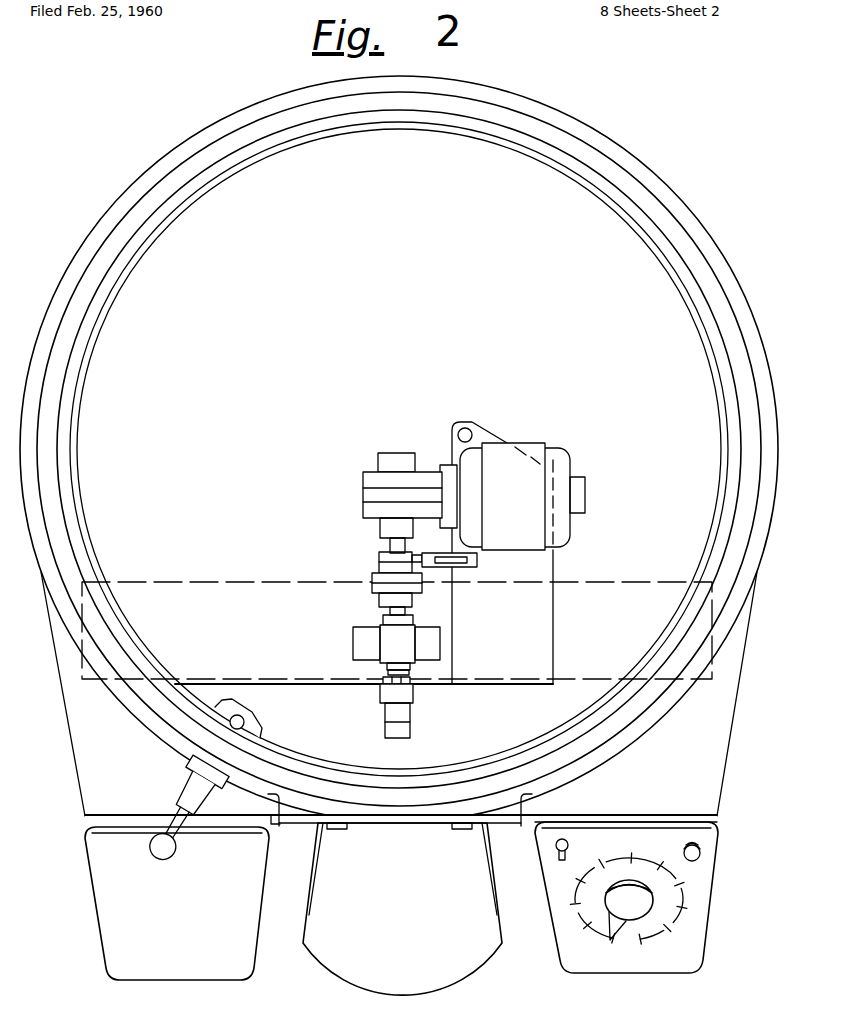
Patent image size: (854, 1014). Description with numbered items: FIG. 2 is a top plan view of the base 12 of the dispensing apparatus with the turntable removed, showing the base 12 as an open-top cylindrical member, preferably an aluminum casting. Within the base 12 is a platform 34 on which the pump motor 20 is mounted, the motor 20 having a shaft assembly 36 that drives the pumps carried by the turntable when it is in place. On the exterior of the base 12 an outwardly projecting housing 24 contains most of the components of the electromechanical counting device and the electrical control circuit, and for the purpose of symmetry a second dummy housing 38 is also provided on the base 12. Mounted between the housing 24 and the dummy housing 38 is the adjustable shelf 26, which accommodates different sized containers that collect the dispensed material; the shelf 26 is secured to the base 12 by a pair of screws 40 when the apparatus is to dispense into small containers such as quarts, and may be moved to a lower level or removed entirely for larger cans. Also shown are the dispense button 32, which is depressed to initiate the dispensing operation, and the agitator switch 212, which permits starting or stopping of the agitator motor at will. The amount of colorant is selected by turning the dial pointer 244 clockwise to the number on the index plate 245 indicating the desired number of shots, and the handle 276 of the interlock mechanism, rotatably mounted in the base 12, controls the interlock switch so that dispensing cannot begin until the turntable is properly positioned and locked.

The base 12 is at (649, 178).
The motor 20 is at (570, 467).
The housing 24 is at (716, 820).
The adjustable shelf 26 is at (402, 909).
The dispense button 32 is at (700, 855).
The platform 34 is at (616, 588).
The shaft assembly 36 is at (355, 572).
The dummy housing 38 is at (177, 903).
The screws 40 is at (337, 831).
The agitator switch 212 is at (566, 840).
The dial pointer 244 is at (612, 942).
The index plate 245 is at (701, 955).
The handle 276 is at (176, 847).